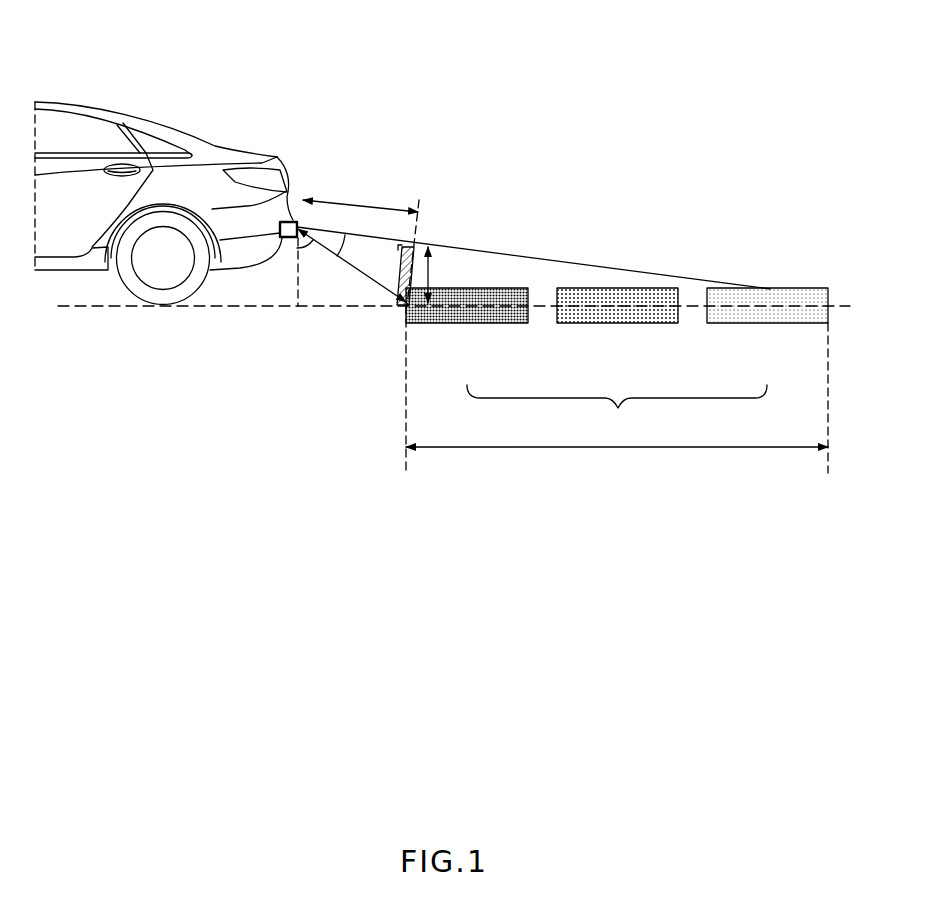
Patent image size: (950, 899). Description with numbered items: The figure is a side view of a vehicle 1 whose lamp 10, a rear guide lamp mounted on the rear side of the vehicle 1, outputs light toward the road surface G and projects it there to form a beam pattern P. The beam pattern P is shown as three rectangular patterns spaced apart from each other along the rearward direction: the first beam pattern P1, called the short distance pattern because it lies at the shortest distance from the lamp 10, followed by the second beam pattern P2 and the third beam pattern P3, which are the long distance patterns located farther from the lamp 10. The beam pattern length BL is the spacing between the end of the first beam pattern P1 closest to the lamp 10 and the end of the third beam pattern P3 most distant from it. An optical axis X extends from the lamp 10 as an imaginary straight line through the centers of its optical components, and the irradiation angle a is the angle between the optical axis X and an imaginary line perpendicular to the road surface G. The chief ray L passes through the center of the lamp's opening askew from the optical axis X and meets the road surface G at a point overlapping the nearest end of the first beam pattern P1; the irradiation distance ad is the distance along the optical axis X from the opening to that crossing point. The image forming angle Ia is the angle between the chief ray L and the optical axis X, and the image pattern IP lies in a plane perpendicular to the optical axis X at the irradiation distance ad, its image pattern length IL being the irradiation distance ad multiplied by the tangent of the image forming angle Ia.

The vehicle 1 is at (189, 110).
The lamp 10 is at (296, 221).
The road surface G is at (838, 303).
The optical axis X is at (528, 257).
The chief ray L is at (343, 262).
The irradiation angle a is at (308, 257).
The image forming angle Ia is at (353, 249).
The image pattern IP is at (403, 275).
The image pattern length IL is at (429, 270).
The irradiation distance ad is at (360, 196).
The first beam pattern P1 is at (466, 312).
The second beam pattern P2 is at (620, 312).
The third beam pattern P3 is at (768, 312).
The beam pattern P is at (617, 409).
The beam pattern length BL is at (617, 462).